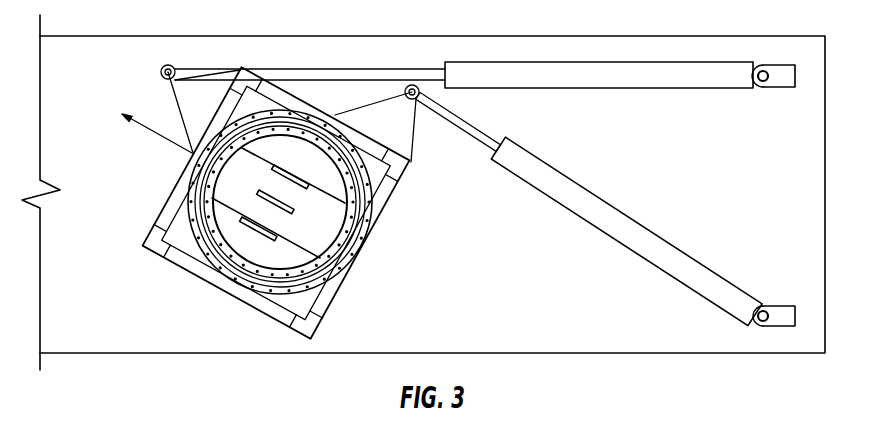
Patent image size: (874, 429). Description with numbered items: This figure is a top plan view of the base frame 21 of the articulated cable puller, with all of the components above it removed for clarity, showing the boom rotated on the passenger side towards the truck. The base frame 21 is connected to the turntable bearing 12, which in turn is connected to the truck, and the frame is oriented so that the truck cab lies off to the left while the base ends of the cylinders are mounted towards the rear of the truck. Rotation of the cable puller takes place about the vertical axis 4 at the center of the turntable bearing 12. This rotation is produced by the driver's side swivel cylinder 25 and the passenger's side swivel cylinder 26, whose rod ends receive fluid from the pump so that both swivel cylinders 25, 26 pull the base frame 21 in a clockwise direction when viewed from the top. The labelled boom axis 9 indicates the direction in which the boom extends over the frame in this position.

The vertical axis 4 is at (281, 208).
The boom axis 9 is at (153, 132).
The turntable bearing 12 is at (218, 247).
The base frame 21 is at (353, 270).
The driver's side swivel cylinder 25 is at (613, 221).
The passenger's side swivel cylinder 26 is at (612, 78).